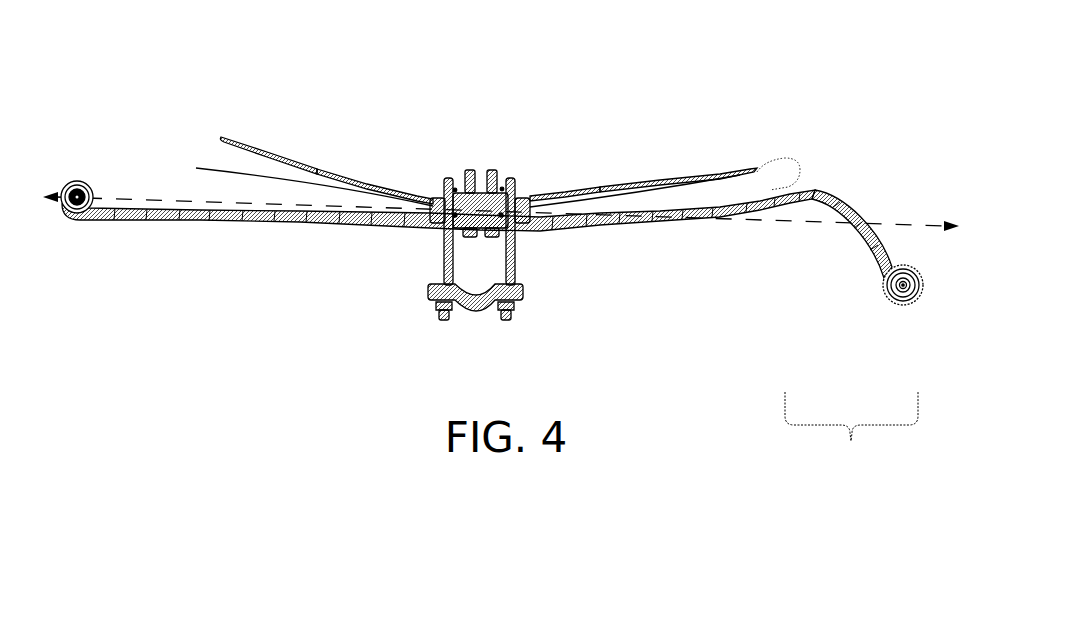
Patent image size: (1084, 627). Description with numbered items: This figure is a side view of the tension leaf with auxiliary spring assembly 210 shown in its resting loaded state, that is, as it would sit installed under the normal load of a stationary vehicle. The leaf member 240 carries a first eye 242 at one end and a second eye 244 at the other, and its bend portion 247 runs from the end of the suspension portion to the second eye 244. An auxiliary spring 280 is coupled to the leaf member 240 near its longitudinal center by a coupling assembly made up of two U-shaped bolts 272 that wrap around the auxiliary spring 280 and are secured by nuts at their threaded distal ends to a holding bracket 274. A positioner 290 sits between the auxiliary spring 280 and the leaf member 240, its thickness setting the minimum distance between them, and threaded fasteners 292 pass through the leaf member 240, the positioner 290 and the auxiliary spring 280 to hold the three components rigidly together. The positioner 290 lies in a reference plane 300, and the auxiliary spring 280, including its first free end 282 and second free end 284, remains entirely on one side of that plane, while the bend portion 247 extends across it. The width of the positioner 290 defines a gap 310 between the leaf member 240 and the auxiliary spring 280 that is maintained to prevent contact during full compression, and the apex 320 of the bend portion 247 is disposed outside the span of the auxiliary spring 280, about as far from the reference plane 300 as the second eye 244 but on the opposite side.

The tension leaf with auxiliary spring assembly 210 is at (255, 321).
The leaf member 240 is at (281, 221).
The first eye 242 is at (78, 196).
The second eye 244 is at (902, 305).
The bend portion 247 is at (851, 434).
The U-shaped bolts 272 is at (447, 253).
The holding bracket 274 is at (462, 302).
The auxiliary spring 280 is at (373, 190).
The first free end 282 is at (221, 138).
The second free end 284 is at (757, 166).
The positioner 290 is at (446, 181).
The threaded fasteners 292 is at (492, 170).
The reference plane 300 is at (909, 185).
The gap 310 is at (799, 168).
The apex 320 is at (828, 192).